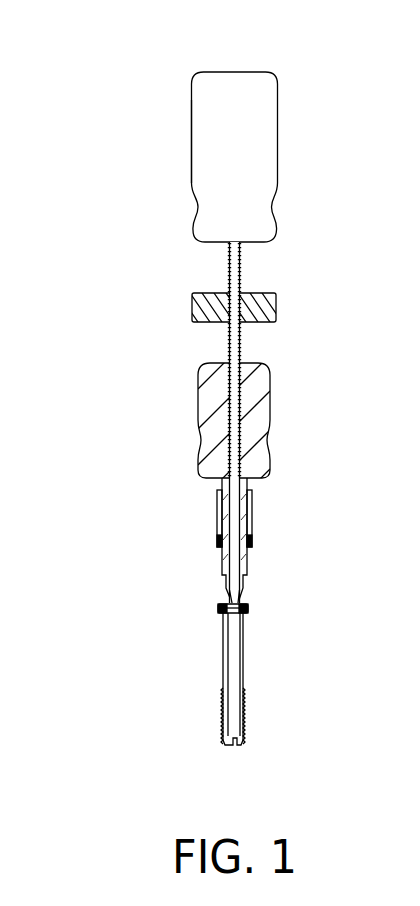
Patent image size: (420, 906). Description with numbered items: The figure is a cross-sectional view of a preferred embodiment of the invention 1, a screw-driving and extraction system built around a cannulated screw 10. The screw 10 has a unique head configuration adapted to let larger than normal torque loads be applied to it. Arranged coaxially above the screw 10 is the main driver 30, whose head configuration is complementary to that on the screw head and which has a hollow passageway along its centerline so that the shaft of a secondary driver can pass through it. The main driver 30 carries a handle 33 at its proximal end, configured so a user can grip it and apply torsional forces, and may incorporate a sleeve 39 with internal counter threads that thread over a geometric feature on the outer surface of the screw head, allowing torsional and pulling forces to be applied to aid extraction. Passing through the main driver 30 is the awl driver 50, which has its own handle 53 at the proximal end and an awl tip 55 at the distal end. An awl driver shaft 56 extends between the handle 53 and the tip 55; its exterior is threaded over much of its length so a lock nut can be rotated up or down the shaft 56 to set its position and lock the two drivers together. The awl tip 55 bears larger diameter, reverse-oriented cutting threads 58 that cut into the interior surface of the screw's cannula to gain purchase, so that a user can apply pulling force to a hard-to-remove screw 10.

The preferred embodiment of the present invention 1 is at (326, 70).
The cannulated screw 10 is at (230, 650).
The main driver 30 is at (265, 417).
The handle 33 is at (207, 470).
The sleeve 39 is at (253, 522).
The awl driver 50 is at (275, 173).
The handle 53 is at (195, 165).
The awl tip 55 is at (238, 598).
The awl driver shaft 56 is at (228, 347).
The cutting threads 58 is at (276, 307).